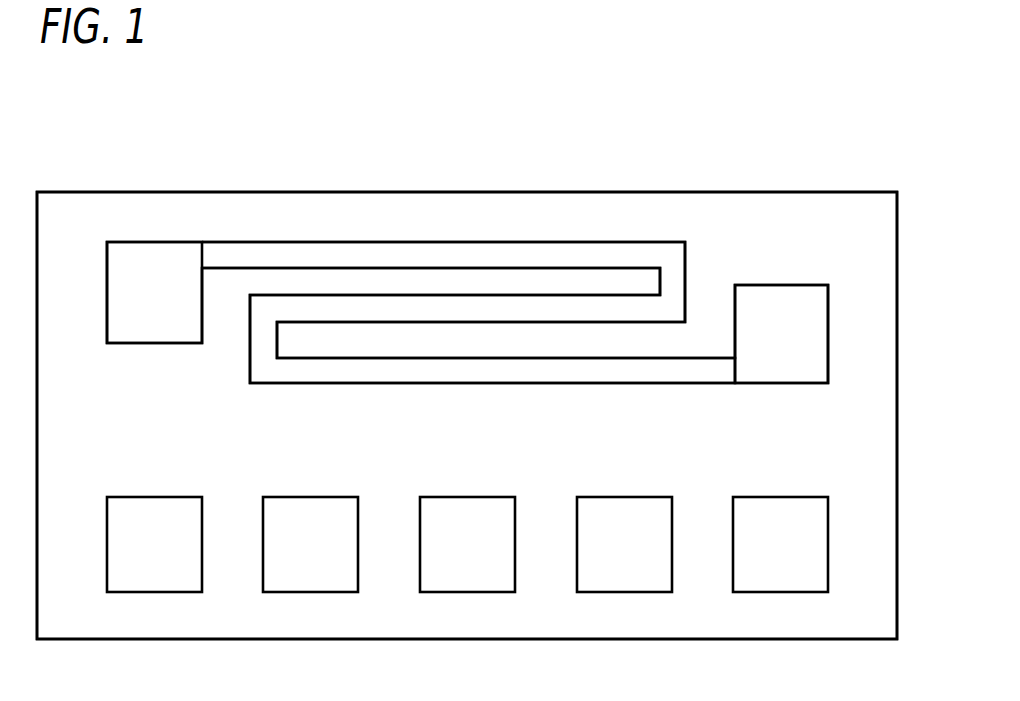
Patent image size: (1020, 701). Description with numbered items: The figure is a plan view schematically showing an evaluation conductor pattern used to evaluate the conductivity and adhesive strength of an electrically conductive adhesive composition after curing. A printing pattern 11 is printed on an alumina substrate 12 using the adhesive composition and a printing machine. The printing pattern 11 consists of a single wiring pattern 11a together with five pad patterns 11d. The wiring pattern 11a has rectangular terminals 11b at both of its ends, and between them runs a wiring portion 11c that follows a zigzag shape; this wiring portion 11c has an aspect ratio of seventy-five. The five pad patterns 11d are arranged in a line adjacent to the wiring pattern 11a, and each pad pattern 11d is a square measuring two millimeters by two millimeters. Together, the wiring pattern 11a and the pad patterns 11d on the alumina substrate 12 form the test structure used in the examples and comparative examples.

The printing pattern 11 is at (871, 437).
The wiring pattern 11a is at (323, 232).
The rectangular terminals 11b is at (125, 336).
The wiring portion 11c is at (611, 244).
The pad patterns 11d is at (170, 502).
The alumina substrate 12 is at (603, 193).